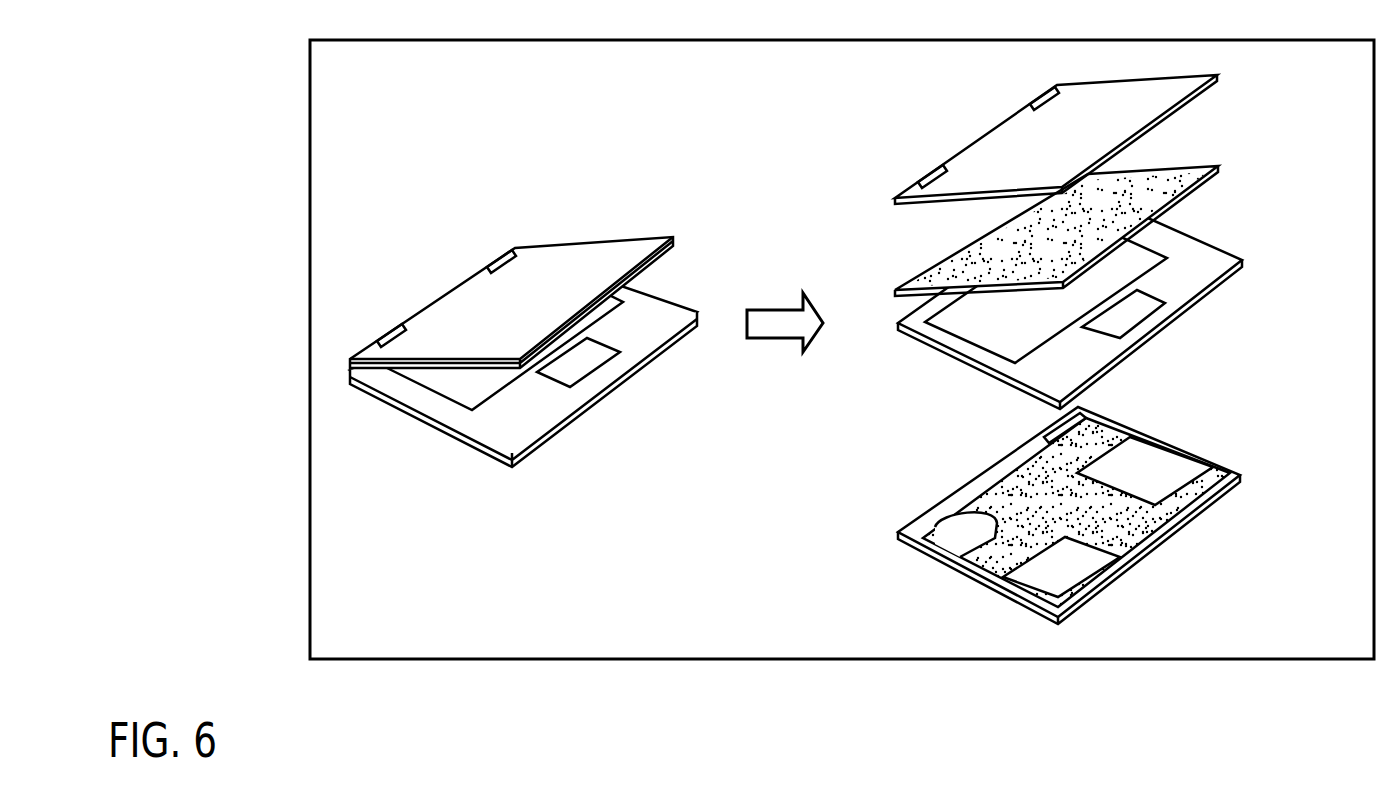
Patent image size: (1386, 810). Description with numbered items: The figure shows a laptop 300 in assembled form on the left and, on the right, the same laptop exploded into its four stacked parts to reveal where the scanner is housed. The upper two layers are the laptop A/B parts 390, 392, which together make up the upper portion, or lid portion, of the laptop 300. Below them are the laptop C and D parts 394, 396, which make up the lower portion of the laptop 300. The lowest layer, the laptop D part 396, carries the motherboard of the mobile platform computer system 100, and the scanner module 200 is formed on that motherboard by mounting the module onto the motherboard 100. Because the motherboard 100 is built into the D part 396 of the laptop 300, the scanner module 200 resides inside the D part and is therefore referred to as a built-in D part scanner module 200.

The mobile platform computer system 100 is at (983, 556).
The built-in D part scanner module 200 is at (1050, 423).
The laptop 300 is at (718, 381).
The laptop A part 390 is at (1213, 95).
The laptop B part 392 is at (1213, 192).
The laptop C part 394 is at (1213, 308).
The laptop D part 396 is at (1213, 516).